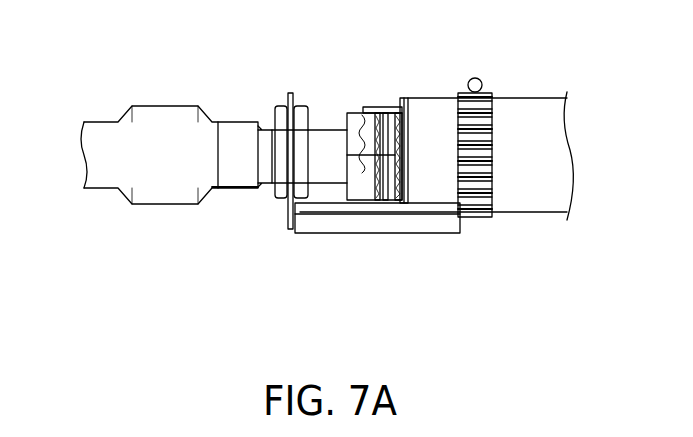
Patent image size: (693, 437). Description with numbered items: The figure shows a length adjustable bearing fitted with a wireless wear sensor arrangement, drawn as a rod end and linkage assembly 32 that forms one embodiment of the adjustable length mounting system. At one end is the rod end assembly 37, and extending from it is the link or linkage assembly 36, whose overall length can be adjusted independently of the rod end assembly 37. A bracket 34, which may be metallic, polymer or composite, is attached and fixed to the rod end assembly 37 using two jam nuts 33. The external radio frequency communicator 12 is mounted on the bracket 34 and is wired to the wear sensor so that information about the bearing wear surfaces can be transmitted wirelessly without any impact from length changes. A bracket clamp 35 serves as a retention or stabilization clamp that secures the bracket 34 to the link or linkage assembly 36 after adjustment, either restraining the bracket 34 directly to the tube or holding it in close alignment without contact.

The external radio frequency communicator 12 is at (393, 223).
The rod end and linkage assembly 32 is at (49, 161).
The jam nuts 33 is at (278, 104).
The bracket 34 is at (292, 100).
The bracket clamp 35 is at (491, 93).
The link or linkage assembly 36 is at (540, 172).
The rod end assembly 37 is at (330, 160).